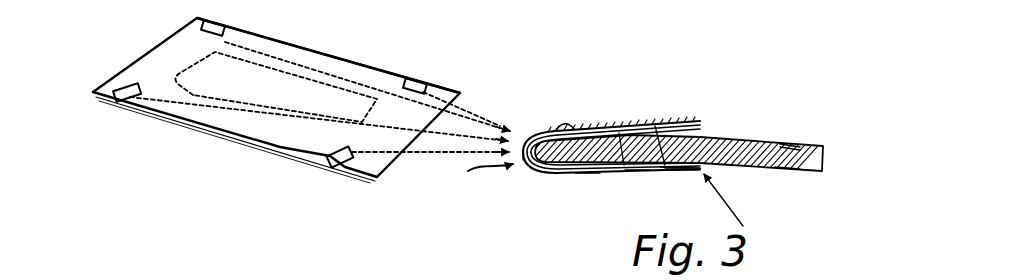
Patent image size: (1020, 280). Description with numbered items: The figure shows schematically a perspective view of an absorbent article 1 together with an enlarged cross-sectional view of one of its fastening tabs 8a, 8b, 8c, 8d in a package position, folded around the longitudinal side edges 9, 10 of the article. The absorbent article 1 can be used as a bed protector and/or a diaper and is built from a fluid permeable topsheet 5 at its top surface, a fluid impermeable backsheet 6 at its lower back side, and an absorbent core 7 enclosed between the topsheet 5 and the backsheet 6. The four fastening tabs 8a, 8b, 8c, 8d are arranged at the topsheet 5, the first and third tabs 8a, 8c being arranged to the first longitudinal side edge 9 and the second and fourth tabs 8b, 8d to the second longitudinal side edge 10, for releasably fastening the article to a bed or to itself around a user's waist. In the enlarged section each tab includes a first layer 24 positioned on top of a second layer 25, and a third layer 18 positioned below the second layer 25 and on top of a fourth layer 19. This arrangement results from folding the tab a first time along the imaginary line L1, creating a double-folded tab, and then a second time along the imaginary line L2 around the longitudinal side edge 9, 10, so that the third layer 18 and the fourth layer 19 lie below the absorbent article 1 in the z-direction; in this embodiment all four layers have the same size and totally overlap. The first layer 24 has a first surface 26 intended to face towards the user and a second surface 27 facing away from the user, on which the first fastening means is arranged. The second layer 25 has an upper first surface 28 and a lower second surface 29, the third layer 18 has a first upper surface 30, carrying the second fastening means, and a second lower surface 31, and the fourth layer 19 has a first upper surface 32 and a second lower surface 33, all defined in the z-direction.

The absorbent article 1 is at (145, 40).
The topsheet 5 is at (793, 134).
The backsheet 6 is at (788, 171).
The absorbent core 7 is at (823, 153).
The first fastening tab 8a is at (128, 90).
The second fastening tab 8b is at (218, 27).
The third fastening tab 8c is at (328, 158).
The fourth fastening tab 8d is at (412, 80).
The first longitudinal side edge 9 is at (232, 135).
The second longitudinal side edge 10 is at (336, 60).
The third layer 18 is at (698, 172).
The fourth layer 19 is at (693, 175).
The first layer 24 is at (700, 124).
The second layer 25 is at (702, 128).
The first surface of the first layer 26 is at (607, 126).
The second surface of the first layer 27 is at (528, 172).
The first surface of the second layer 28 is at (660, 126).
The second surface of the second layer 29 is at (640, 175).
The first upper surface of the third layer 30 is at (793, 137).
The second lower surface of the third layer 31 is at (676, 173).
The first upper surface of the fourth layer 32 is at (620, 132).
The second lower surface of the fourth layer 33 is at (588, 178).
The imaginary line L1 is at (737, 204).
The imaginary line L2 is at (476, 169).